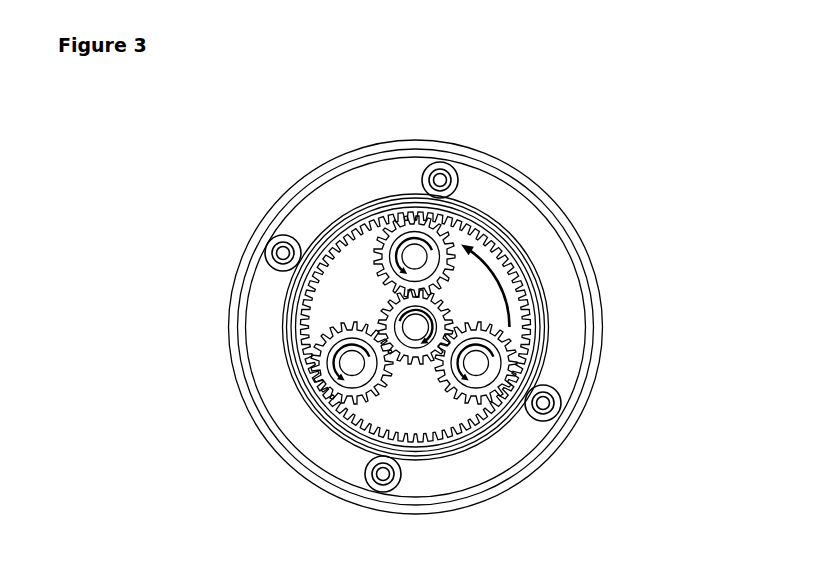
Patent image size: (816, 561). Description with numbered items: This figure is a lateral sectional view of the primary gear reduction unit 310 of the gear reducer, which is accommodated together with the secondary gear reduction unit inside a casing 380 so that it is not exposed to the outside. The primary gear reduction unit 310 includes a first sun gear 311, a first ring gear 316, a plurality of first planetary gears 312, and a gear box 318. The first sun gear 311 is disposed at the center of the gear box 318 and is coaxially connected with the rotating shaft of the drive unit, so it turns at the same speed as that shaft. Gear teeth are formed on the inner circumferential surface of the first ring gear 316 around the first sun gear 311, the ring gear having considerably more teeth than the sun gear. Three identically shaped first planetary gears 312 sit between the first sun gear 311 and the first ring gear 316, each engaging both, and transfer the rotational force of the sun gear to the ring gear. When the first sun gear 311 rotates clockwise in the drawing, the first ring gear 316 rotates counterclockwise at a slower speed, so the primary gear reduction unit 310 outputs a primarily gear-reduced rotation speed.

The primary gear reduction unit 310 is at (462, 280).
The first sun gear 311 is at (443, 312).
The first planetary gears 312 is at (397, 220).
The first ring gear 316 is at (508, 272).
The gear box 318 is at (496, 232).
The casing 380 is at (470, 143).